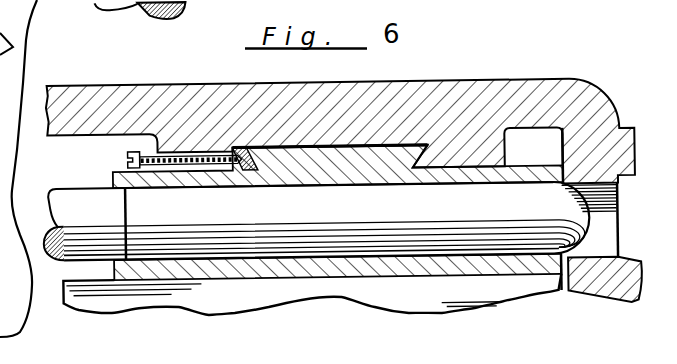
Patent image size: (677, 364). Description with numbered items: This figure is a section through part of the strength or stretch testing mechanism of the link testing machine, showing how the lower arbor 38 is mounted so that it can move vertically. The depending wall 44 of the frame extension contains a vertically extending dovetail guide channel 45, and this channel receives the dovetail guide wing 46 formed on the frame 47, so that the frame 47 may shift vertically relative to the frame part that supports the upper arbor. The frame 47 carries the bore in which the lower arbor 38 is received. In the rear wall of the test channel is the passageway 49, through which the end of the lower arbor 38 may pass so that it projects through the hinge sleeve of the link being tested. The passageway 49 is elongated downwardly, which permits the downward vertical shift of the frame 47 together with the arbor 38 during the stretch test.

The lower arbor 38 is at (93, 194).
The depending wall 44 is at (503, 102).
The dovetail guide channel 45 is at (390, 146).
The dovetail guide wing 46 is at (418, 168).
The frame 47 is at (497, 269).
The passageway 49 is at (607, 241).